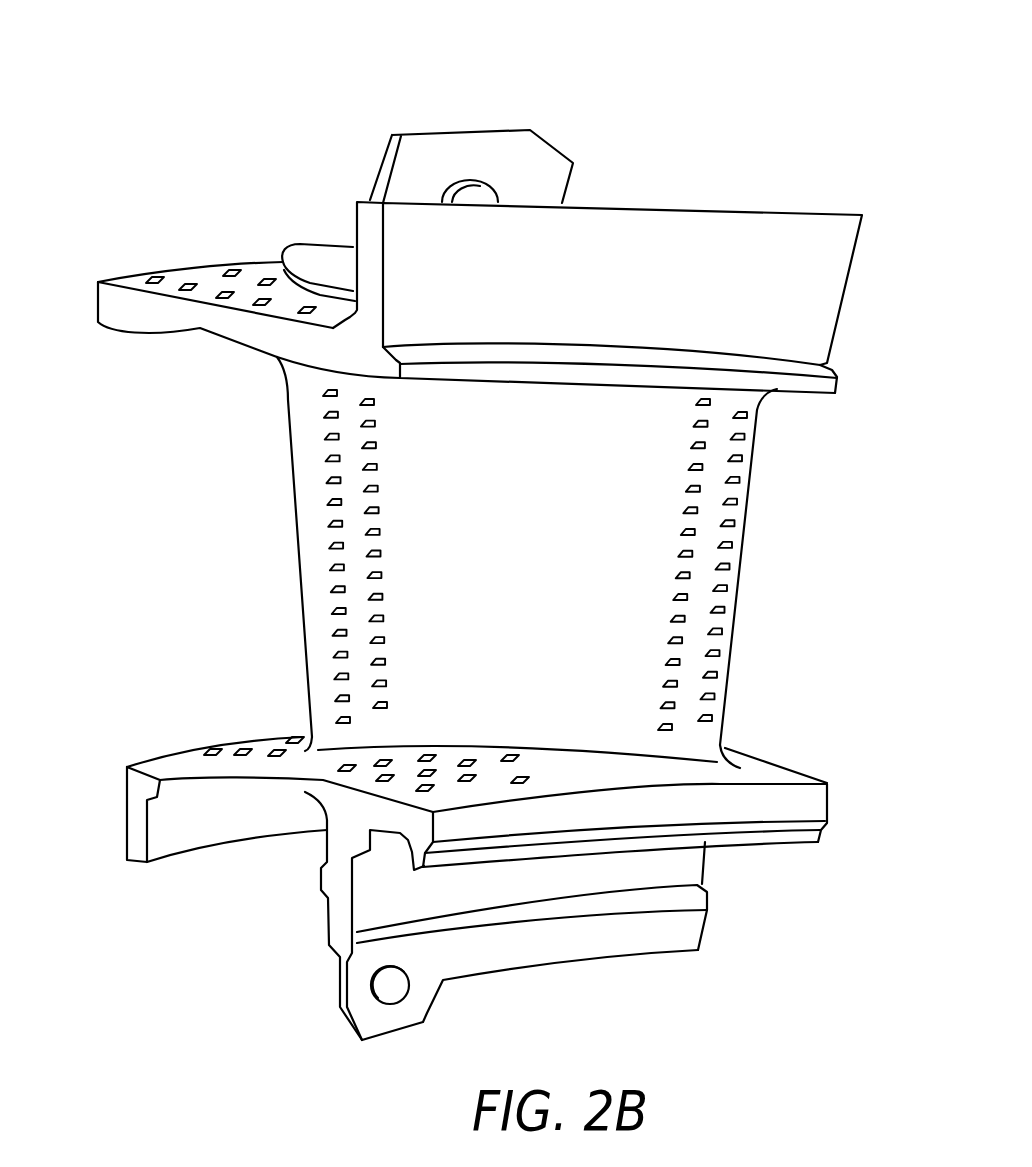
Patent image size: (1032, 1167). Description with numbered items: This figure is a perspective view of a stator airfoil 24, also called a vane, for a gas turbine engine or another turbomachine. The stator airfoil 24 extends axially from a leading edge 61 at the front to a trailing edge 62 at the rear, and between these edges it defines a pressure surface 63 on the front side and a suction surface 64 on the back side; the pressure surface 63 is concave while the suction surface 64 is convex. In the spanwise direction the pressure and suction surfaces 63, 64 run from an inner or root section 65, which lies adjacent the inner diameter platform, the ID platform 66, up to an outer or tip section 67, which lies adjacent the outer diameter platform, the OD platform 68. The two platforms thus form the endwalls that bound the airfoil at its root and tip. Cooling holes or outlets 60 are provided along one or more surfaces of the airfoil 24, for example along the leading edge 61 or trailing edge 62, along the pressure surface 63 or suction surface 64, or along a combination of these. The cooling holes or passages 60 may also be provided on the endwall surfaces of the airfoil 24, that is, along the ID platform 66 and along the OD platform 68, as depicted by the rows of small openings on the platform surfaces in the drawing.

The stator airfoil 24 is at (132, 120).
The cooling holes 60 is at (233, 267).
The leading edge 61 is at (287, 428).
The trailing edge 62 is at (733, 627).
The pressure surface 63 is at (440, 563).
The suction surface 64 is at (745, 556).
The inner section 65 is at (327, 728).
The ID platform 66 is at (815, 793).
The outer section 67 is at (303, 383).
The OD platform 68 is at (113, 317).